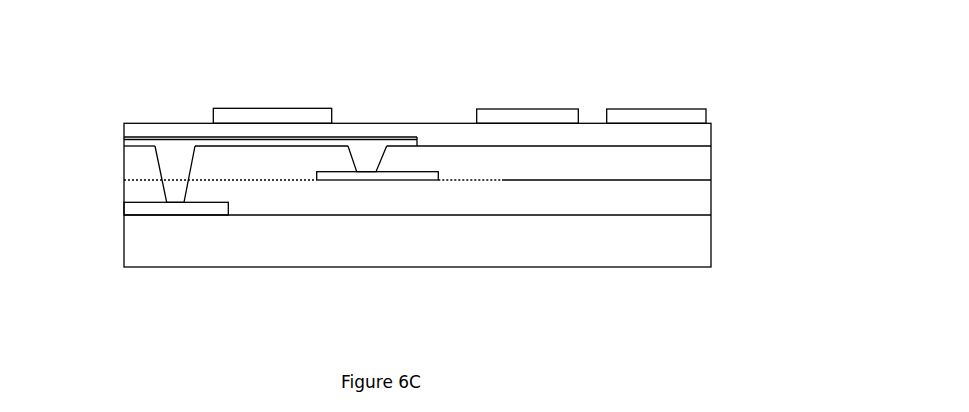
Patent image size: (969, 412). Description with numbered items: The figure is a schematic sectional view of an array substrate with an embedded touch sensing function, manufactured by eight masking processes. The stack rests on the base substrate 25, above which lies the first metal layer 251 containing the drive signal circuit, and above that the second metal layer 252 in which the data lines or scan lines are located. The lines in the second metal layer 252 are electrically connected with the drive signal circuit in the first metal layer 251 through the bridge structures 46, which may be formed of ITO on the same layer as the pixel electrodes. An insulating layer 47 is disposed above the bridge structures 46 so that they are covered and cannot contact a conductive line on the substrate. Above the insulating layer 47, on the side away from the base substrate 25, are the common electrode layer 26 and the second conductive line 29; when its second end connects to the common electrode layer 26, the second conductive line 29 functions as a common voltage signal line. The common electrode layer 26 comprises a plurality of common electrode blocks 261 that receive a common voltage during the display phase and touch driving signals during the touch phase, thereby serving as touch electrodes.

The base substrate 25 is at (335, 258).
The first metal layer 251 is at (137, 205).
The second metal layer 252 is at (422, 173).
The common electrode layer 26 is at (627, 68).
The common electrode blocks 261 is at (691, 118).
The second conductive line 29 is at (267, 118).
The bridge structures 46 is at (176, 146).
The insulating layer 47 is at (362, 130).